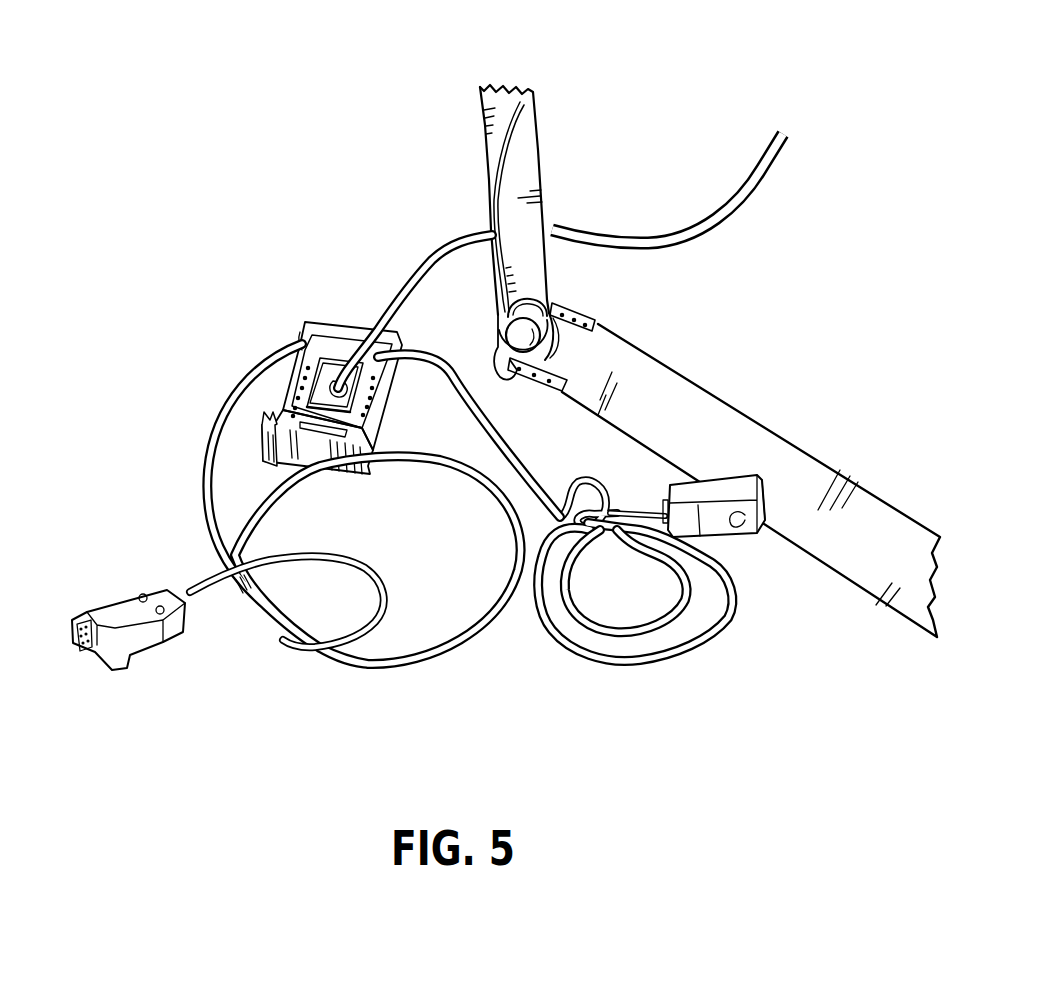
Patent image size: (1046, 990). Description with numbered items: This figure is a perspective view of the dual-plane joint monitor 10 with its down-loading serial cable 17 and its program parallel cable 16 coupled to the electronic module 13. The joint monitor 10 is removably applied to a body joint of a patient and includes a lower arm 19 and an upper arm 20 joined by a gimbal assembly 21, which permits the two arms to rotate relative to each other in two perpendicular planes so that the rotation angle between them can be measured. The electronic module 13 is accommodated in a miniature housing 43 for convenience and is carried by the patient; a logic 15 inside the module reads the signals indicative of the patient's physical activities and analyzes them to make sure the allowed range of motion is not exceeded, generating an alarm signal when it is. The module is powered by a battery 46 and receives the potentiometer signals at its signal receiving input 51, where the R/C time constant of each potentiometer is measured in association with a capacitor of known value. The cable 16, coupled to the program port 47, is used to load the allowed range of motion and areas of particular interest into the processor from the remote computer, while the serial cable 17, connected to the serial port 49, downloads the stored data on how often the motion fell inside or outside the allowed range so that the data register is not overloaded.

The dual-plane joint monitor 10 is at (404, 197).
The electronic module 13 is at (291, 372).
The logic 15 is at (366, 328).
The cable 16 is at (730, 590).
The serial cable 17 is at (500, 597).
The lower arm 19 is at (690, 406).
The upper arm 20 is at (530, 178).
The gimbal assembly 21 is at (565, 291).
The miniature housing 43 is at (281, 458).
The battery 46 is at (316, 437).
The port 47 is at (392, 356).
The serial port 49 is at (300, 330).
The input 51 is at (387, 404).